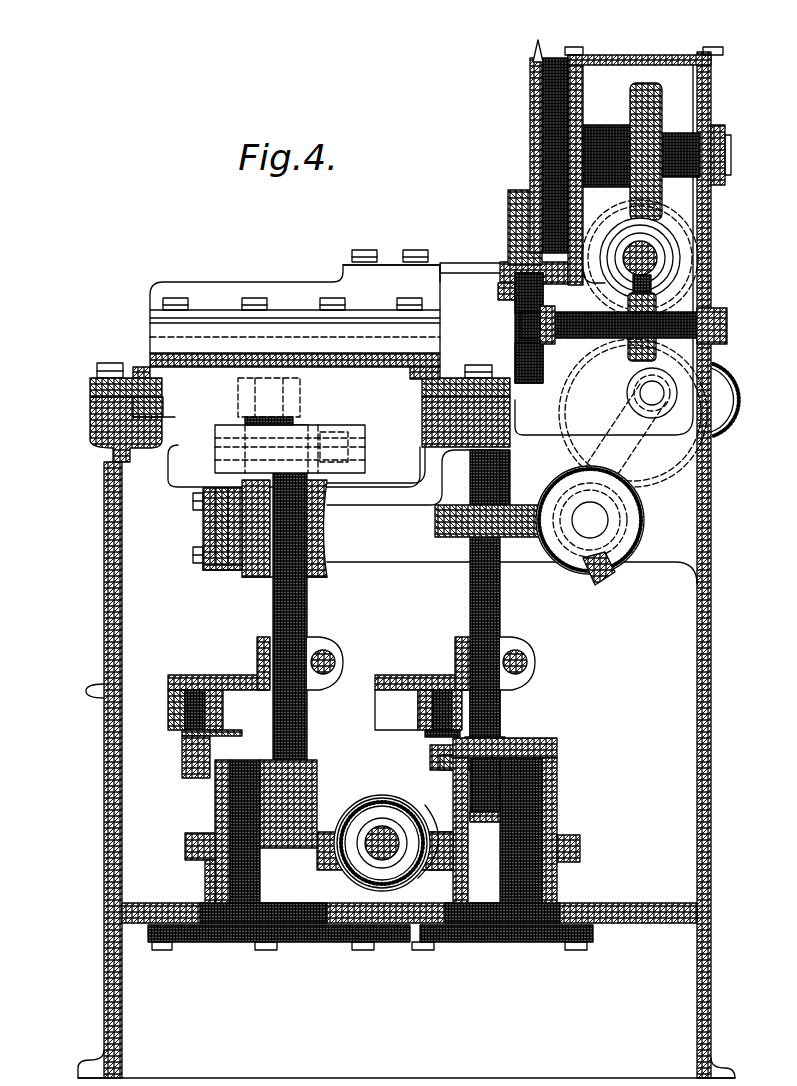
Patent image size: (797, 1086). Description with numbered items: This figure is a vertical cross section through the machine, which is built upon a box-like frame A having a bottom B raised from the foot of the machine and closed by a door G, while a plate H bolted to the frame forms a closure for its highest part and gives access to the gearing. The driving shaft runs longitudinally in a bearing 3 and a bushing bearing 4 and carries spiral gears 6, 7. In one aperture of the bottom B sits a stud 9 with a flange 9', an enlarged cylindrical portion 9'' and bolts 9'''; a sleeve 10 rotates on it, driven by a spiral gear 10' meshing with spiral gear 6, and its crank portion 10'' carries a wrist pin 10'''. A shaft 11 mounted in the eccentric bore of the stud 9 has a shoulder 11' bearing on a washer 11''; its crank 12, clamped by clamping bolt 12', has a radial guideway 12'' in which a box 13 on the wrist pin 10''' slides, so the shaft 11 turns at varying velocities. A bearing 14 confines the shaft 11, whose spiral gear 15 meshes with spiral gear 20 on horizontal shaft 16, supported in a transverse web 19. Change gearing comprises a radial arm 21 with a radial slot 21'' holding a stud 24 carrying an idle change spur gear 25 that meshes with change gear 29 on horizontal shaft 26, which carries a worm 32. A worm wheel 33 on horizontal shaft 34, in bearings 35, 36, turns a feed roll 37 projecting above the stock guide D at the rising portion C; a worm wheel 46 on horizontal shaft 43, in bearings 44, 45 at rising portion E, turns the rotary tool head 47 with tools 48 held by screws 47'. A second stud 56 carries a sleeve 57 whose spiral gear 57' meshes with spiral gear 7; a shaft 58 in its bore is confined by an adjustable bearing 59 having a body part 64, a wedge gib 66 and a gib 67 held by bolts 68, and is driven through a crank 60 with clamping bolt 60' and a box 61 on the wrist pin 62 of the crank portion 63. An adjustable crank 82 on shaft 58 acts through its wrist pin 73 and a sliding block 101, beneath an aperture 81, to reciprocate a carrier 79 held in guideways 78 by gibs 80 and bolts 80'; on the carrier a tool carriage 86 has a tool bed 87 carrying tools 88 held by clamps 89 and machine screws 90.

The frame A is at (697, 712).
The bottom B is at (618, 903).
The rising portion C is at (515, 345).
The stock guide D is at (498, 288).
The rising portion E is at (530, 188).
The bracket F is at (508, 265).
The door G is at (104, 647).
The plate H is at (619, 233).
The bearing 3 is at (380, 828).
The bushing bearing 4 is at (408, 822).
The spiral gear 6 is at (424, 836).
The spiral gear 7 is at (355, 820).
The stud 9 is at (525, 830).
The flange 9' is at (370, 952).
The cylindrical portion 9'' is at (380, 940).
The bolts 9''' is at (381, 957).
The sleeve 10 is at (513, 812).
The spiral gear 10' is at (588, 836).
The crank portion 10'' is at (426, 768).
The wrist pin 10''' is at (426, 753).
The shaft 11 is at (504, 635).
The shoulder 11' is at (504, 714).
The washer 11'' is at (509, 732).
The crank 12 is at (455, 663).
The clamping bolt 12' is at (537, 656).
The radial guideway 12'' is at (379, 710).
The box 13 is at (420, 715).
The bearing 14 is at (510, 470).
The spiral gear 15 is at (440, 525).
The horizontal shaft 16 is at (612, 516).
The transverse web 19 is at (644, 521).
The spiral gear 20 is at (612, 575).
The radial arm 21 is at (633, 413).
The radial slot 21'' is at (635, 434).
The stud 24 is at (627, 392).
The idle change spur gear 25 is at (736, 395).
The horizontal shaft 26 is at (650, 252).
The change gear 29 is at (700, 264).
The worm 32 is at (622, 246).
The worm wheel 33 is at (630, 352).
The horizontal shaft 34 is at (572, 320).
The bearing 35 is at (725, 320).
The bearing 36 is at (515, 310).
The feed roll 37 is at (530, 375).
The horizontal shaft 43 is at (680, 133).
The bearing 44 is at (724, 135).
The bearing 45 is at (598, 125).
The worm wheel 46 is at (645, 83).
The rotary tool head 47 is at (556, 137).
The screws 47' is at (511, 155).
The tools 48 is at (534, 52).
The stud 56 is at (230, 815).
The sleeve 57 is at (161, 881).
The spiral gear 57' is at (159, 846).
The shaft 58 is at (306, 598).
The bearing 59 is at (325, 525).
The crank 60 is at (162, 710).
The clamping bolt 60' is at (341, 648).
The box 61 is at (200, 675).
The wrist pin 62 is at (223, 711).
The crank portion 63 is at (205, 770).
The body part 64 is at (250, 575).
The wedge gib 66 is at (225, 570).
The gib 67 is at (203, 530).
The bolts 68 is at (193, 505).
The wrist pin 73 is at (300, 405).
The guideways 78 is at (90, 410).
The carrier 79 is at (180, 353).
The gibs 80 is at (300, 388).
The bolts 80' is at (99, 353).
The aperture 81 is at (170, 445).
The adjustable crank 82 is at (215, 468).
The tool carriage 86 is at (222, 290).
The tool bed 87 is at (372, 290).
The tools 88 is at (453, 263).
The clamps 89 is at (360, 250).
The machine screws 90 is at (412, 250).
The sliding block 101 is at (240, 405).